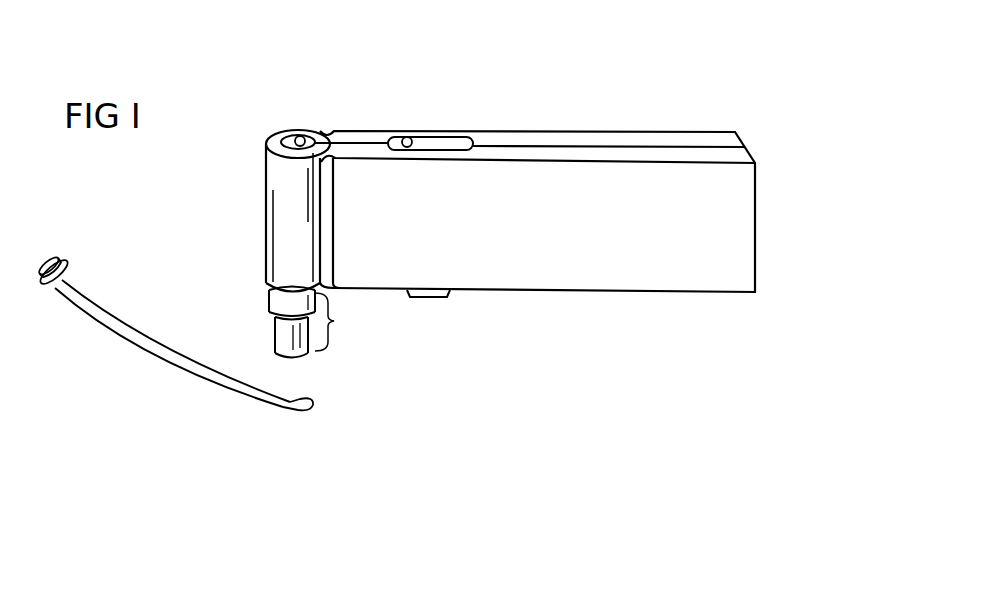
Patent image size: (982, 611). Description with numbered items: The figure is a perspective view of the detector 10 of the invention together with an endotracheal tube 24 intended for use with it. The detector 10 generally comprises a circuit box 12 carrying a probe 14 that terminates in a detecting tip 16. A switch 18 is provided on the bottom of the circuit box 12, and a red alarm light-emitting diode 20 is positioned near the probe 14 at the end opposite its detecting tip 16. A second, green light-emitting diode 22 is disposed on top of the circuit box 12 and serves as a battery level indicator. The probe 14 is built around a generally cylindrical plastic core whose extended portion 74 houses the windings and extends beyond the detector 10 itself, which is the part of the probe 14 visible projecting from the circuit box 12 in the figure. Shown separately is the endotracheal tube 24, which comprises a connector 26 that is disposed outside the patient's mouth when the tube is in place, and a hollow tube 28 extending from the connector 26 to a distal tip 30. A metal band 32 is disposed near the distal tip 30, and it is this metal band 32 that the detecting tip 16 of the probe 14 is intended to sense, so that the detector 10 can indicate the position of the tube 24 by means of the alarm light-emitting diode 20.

The detector 10 is at (583, 100).
The circuit box 12 is at (757, 222).
The probe 14 is at (263, 312).
The detecting tip 16 is at (276, 357).
The switch 18 is at (430, 297).
The alarm light-emitting diode 20 is at (301, 135).
The second light-emitting diode 22 is at (409, 137).
The endotracheal tube 24 is at (138, 353).
The connector 26 is at (55, 258).
The hollow tube 28 is at (92, 317).
The distal tip 30 is at (305, 394).
The metal band 32 is at (283, 406).
The extended portion 74 is at (334, 321).